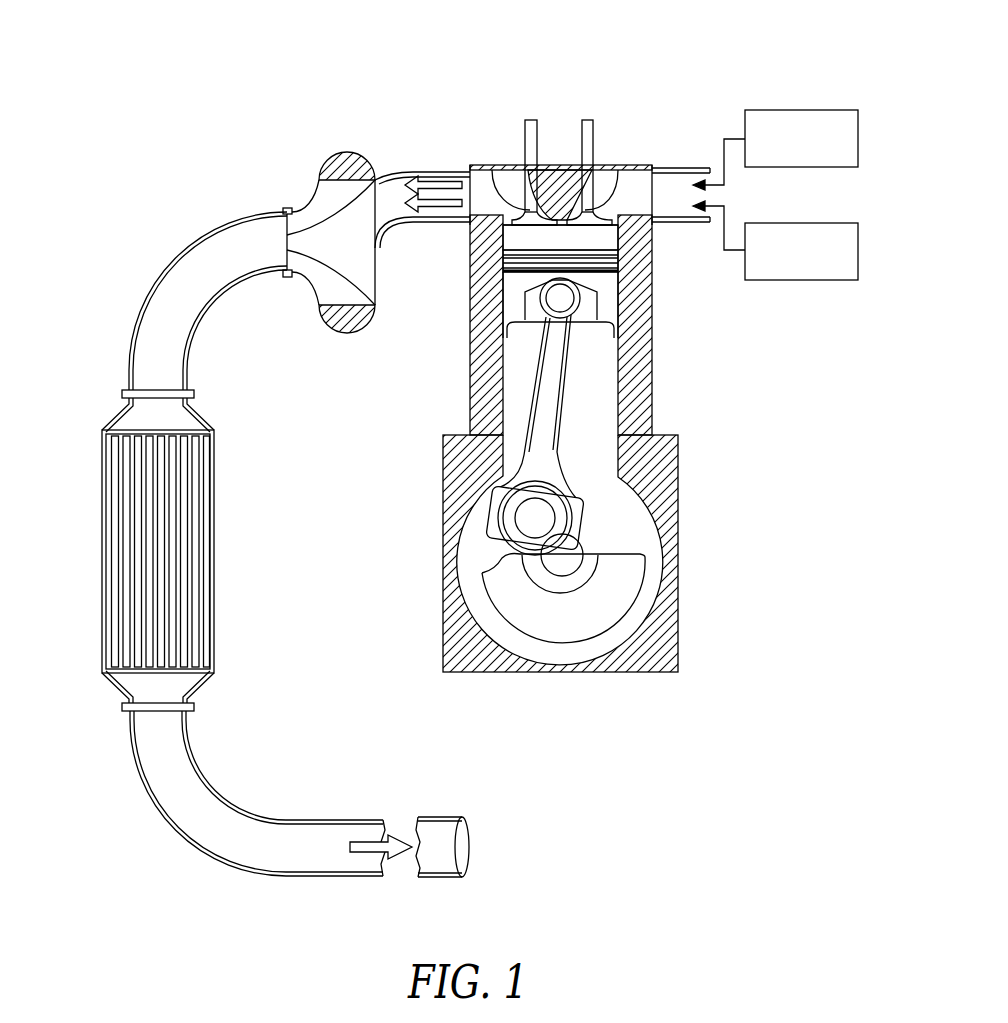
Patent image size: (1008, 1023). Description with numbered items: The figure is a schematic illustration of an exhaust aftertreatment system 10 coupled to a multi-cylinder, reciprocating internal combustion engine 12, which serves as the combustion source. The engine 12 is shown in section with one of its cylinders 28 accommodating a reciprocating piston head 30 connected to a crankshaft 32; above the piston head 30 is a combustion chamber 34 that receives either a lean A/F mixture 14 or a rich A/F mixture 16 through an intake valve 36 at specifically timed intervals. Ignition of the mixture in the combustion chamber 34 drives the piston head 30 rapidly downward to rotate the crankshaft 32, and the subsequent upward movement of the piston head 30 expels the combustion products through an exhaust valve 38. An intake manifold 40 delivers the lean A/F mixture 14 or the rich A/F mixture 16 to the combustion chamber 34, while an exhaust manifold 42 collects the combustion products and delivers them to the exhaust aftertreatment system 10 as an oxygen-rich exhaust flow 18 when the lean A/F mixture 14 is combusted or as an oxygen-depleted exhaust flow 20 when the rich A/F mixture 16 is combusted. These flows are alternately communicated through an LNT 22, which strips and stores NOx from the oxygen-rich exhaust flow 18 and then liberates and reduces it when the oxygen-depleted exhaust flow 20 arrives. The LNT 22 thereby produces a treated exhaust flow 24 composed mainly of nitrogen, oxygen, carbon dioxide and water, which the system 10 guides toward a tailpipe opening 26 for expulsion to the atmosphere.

The exhaust aftertreatment system 10 is at (158, 212).
The multi-cylinder, reciprocating internal combustion engine 12 is at (652, 305).
The lean A/F mixture 14 is at (785, 110).
The rich A/F mixture 16 is at (783, 280).
The oxygen-rich exhaust flow 18 is at (433, 180).
The oxygen-depleted exhaust flow 20 is at (433, 212).
The LNT 22 is at (90, 513).
The treated exhaust flow 24 is at (366, 860).
The tailpipe opening 26 is at (468, 847).
The cylinders 28 is at (627, 402).
The piston heads 30 is at (512, 307).
The crankshaft 32 is at (537, 518).
The combustion chamber 34 is at (622, 240).
The intake valve 36 is at (618, 172).
The exhaust valve 38 is at (492, 173).
The intake manifold 40 is at (680, 168).
The exhaust manifold 42 is at (455, 168).